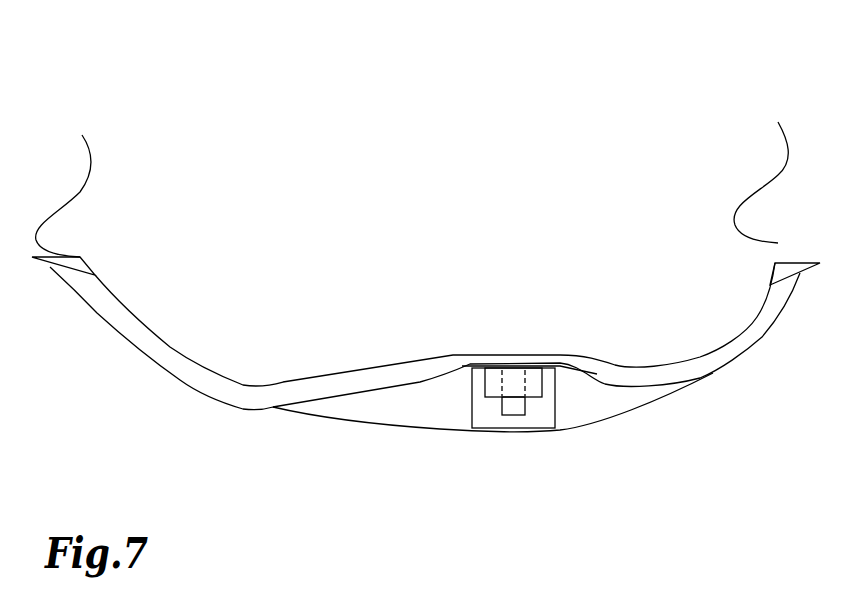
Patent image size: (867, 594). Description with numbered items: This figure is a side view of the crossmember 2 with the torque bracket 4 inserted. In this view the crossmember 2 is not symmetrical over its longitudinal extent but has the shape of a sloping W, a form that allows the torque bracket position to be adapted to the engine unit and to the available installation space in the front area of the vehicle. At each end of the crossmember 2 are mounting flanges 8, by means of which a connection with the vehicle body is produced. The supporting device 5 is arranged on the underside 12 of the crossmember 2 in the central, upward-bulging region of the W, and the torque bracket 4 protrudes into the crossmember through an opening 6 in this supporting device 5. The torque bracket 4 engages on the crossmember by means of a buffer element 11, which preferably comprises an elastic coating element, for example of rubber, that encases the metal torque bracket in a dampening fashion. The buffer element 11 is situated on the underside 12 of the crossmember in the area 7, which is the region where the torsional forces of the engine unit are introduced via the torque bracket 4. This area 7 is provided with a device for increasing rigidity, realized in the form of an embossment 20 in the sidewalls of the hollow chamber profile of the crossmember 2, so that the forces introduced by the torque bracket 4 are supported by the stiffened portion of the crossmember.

The crossmember 2 is at (208, 158).
The mounting flanges 8 is at (426, 183).
The embossment 20 is at (415, 372).
The area 7 is at (405, 160).
The underside 12 is at (323, 400).
The supporting device 5 is at (625, 410).
The buffer element 11 is at (537, 388).
The opening 6 is at (543, 416).
The torque bracket 4 is at (501, 413).